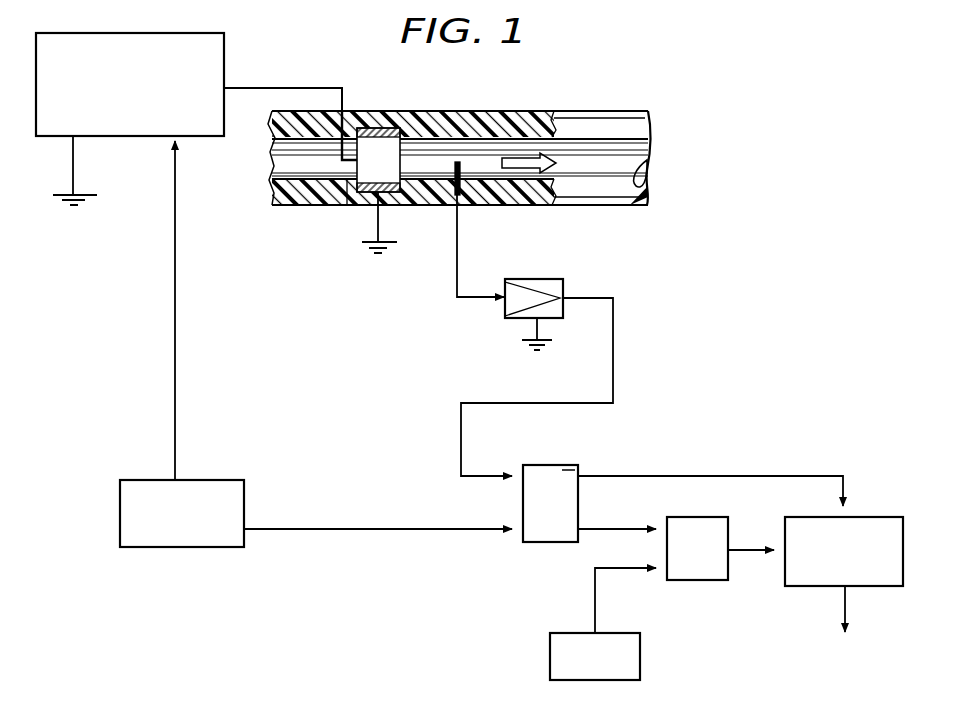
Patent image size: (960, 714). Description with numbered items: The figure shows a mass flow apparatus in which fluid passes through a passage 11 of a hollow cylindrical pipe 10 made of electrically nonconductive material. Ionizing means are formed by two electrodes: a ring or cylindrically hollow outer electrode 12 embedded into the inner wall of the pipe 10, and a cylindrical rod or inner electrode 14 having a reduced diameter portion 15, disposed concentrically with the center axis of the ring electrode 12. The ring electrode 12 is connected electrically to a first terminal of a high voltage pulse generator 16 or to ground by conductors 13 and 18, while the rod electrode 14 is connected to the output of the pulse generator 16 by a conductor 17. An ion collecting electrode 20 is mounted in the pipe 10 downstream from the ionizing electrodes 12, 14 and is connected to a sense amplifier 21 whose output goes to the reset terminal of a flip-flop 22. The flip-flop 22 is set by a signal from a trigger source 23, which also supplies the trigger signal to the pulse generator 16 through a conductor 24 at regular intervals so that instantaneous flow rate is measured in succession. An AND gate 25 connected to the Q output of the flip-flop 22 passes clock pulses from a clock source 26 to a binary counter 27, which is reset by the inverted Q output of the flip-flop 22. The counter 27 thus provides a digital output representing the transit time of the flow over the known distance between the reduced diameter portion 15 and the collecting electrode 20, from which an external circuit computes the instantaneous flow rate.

The pipe 10 is at (465, 112).
The passage 11 is at (437, 143).
The ring electrode 12 is at (367, 198).
The conductor 13 is at (380, 220).
The inner electrode 14 is at (333, 191).
The reduced diameter portion 15 is at (370, 126).
The high voltage pulse generator 16 is at (121, 38).
The conductor 17 is at (258, 88).
The conductor 18 is at (75, 173).
The ion collecting electrode 20 is at (463, 168).
The sense amplifier 21 is at (545, 282).
The flip-flop 22 is at (550, 468).
The trigger source 23 is at (208, 482).
The conductor 24 is at (176, 325).
The AND gate 25 is at (707, 520).
The clock source 26 is at (640, 665).
The binary counter 27 is at (905, 533).